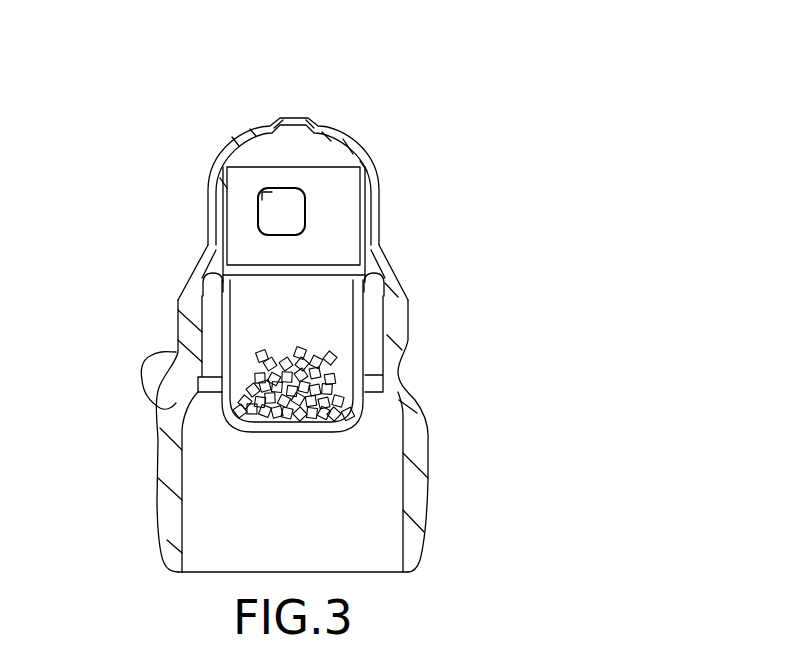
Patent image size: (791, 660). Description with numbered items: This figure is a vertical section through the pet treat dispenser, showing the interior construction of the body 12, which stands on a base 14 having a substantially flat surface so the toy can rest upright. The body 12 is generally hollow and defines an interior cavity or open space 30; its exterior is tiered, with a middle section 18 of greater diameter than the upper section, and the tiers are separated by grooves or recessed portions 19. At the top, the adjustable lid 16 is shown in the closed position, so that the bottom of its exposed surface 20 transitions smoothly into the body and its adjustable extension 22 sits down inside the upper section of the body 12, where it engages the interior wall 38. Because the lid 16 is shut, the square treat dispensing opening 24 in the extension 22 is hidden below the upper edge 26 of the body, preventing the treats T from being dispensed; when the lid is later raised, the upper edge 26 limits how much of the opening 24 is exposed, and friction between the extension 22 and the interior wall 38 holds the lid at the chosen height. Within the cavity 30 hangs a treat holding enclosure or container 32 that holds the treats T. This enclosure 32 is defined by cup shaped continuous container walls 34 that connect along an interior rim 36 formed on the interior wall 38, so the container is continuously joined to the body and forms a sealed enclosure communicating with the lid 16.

The body 12 is at (122, 326).
The base 14 is at (198, 572).
The adjustable lid 16 is at (365, 100).
The middle section 18 is at (165, 353).
The grooves or recessed portions 19 is at (375, 245).
The exposed surface 20 is at (345, 134).
The adjustable extension 22 is at (340, 208).
The treat dispensing opening 24 is at (277, 210).
The upper edge 26 is at (213, 186).
The interior cavity 30 is at (280, 515).
The treat holding enclosure 32 is at (385, 345).
The container walls 34 is at (233, 357).
The interior rim 36 is at (203, 290).
The interior wall 38 is at (183, 428).
The treats T is at (247, 425).